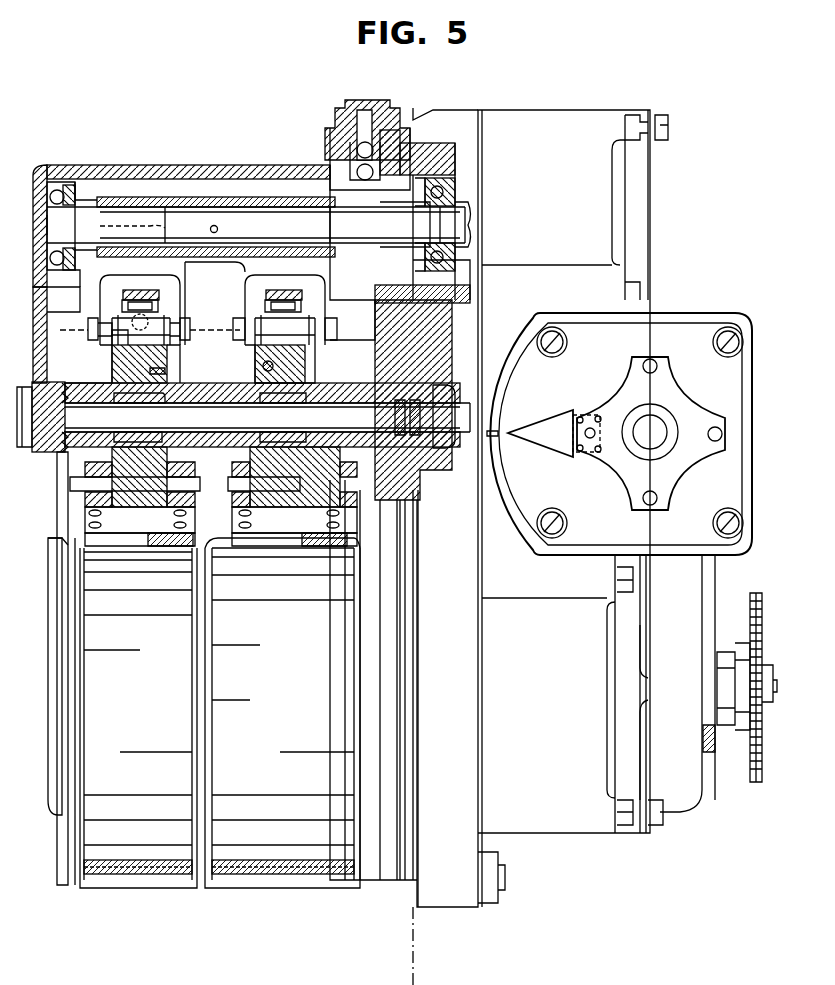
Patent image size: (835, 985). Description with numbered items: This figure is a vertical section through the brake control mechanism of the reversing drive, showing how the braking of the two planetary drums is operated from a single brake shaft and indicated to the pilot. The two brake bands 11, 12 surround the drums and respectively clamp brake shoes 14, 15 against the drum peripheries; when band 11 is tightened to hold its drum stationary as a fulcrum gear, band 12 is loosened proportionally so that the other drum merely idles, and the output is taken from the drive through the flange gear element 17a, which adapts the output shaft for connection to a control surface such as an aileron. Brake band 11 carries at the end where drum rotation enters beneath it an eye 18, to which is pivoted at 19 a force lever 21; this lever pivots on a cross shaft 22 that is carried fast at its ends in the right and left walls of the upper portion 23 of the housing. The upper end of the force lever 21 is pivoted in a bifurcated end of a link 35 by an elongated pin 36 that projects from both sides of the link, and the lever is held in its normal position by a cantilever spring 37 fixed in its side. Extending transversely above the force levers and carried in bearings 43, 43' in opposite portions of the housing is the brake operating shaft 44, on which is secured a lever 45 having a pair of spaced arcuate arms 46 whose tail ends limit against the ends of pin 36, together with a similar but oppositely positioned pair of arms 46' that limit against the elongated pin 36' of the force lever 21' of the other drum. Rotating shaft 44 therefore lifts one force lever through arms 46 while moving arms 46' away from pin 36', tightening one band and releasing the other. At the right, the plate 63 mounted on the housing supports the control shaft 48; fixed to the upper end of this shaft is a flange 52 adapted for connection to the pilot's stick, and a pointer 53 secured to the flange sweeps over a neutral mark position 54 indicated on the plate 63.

The brake band 11 is at (146, 880).
The brake band 12 is at (296, 880).
The brake shoe 14 is at (118, 862).
The brake shoe 15 is at (273, 862).
The flange gear element 17a is at (748, 778).
The eye 18 is at (80, 464).
The pivot 19 is at (72, 490).
The force lever 21 is at (134, 445).
The force lever 21' is at (294, 445).
The cross shaft 22 is at (228, 427).
The upper portion of the housing 23 is at (40, 345).
The link 35 is at (120, 348).
The pin 36 is at (162, 310).
The pin 36' is at (278, 303).
The cantilever spring 37 is at (166, 375).
The bearing 43 is at (72, 201).
The bearing 43' is at (422, 201).
The brake operating shaft 44 is at (201, 239).
The lever 45 is at (197, 197).
The arcuate arms 46 is at (150, 339).
The arcuate arms 46' is at (281, 348).
The control shaft 48 is at (664, 440).
The flange 52 is at (700, 402).
The pointer 53 is at (548, 443).
The neutral mark position 54 is at (500, 430).
The plate 63 is at (690, 313).